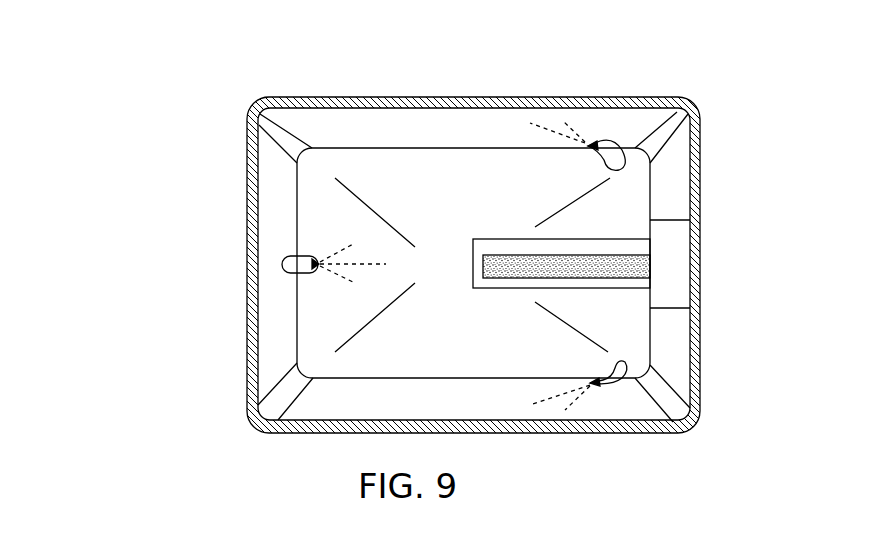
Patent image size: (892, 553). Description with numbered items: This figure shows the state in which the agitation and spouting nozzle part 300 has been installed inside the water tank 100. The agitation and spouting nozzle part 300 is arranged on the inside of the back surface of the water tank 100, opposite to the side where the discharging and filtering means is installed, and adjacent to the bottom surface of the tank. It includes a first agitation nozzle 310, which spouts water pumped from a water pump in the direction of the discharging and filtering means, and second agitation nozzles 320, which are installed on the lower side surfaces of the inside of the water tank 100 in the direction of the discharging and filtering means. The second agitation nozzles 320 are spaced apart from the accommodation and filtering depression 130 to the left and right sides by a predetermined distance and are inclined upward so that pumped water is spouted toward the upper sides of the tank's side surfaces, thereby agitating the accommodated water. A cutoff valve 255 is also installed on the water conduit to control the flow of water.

The water tank 100 is at (461, 97).
The accommodation and filtering depression 130 is at (634, 247).
The cutoff valve 255 is at (577, 265).
The agitation and spouting nozzle part 300 is at (118, 275).
The first agitation nozzle 310 is at (282, 265).
The second agitation nozzle 320 is at (600, 378).